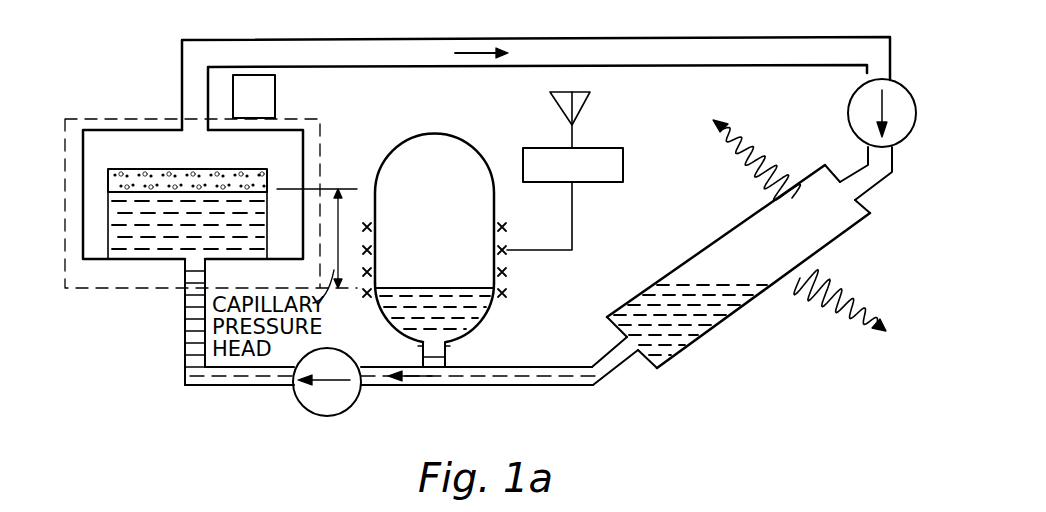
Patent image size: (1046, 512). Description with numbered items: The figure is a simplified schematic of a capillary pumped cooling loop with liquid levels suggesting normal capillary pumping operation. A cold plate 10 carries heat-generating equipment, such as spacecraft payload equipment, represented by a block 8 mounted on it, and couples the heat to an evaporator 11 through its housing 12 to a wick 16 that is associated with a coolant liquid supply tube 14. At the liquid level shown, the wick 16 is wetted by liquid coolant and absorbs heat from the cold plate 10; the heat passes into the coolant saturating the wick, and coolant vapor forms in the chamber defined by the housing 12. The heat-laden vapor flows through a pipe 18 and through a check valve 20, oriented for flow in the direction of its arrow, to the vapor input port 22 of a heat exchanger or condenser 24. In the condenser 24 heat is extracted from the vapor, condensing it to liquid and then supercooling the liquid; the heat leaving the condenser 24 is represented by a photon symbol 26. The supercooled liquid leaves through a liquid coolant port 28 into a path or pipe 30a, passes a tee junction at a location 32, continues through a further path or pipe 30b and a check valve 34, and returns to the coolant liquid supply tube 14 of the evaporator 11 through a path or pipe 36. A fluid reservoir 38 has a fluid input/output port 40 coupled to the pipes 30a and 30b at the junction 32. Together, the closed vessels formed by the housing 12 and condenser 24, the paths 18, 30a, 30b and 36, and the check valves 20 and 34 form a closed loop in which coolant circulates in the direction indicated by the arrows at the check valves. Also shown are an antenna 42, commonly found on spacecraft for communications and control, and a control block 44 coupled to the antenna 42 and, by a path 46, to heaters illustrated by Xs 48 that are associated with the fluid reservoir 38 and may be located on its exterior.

The block 8 is at (276, 100).
The cold plate 10 is at (65, 119).
The evaporator 11 is at (155, 113).
The housing 12 is at (128, 130).
The coolant liquid supply tube 14 is at (156, 260).
The wick 16 is at (126, 170).
The pipe 18 is at (303, 40).
The check valve 20 is at (848, 106).
The vapor input port 22 is at (864, 193).
The heat exchanger or condenser 24 is at (722, 237).
The photon symbol 26 is at (772, 152).
The liquid coolant port 28 is at (641, 352).
The path or pipe 30a is at (546, 387).
The path or pipe 30b is at (425, 386).
The tee junction 32 is at (446, 387).
The check valve 34 is at (357, 401).
The path or pipe 36 is at (256, 386).
The fluid reservoir 38 is at (450, 133).
The fluid input/output port 40 is at (447, 356).
The antenna 42 is at (583, 106).
The control block 44 is at (623, 164).
The path 46 is at (572, 228).
The heaters 48 is at (507, 293).